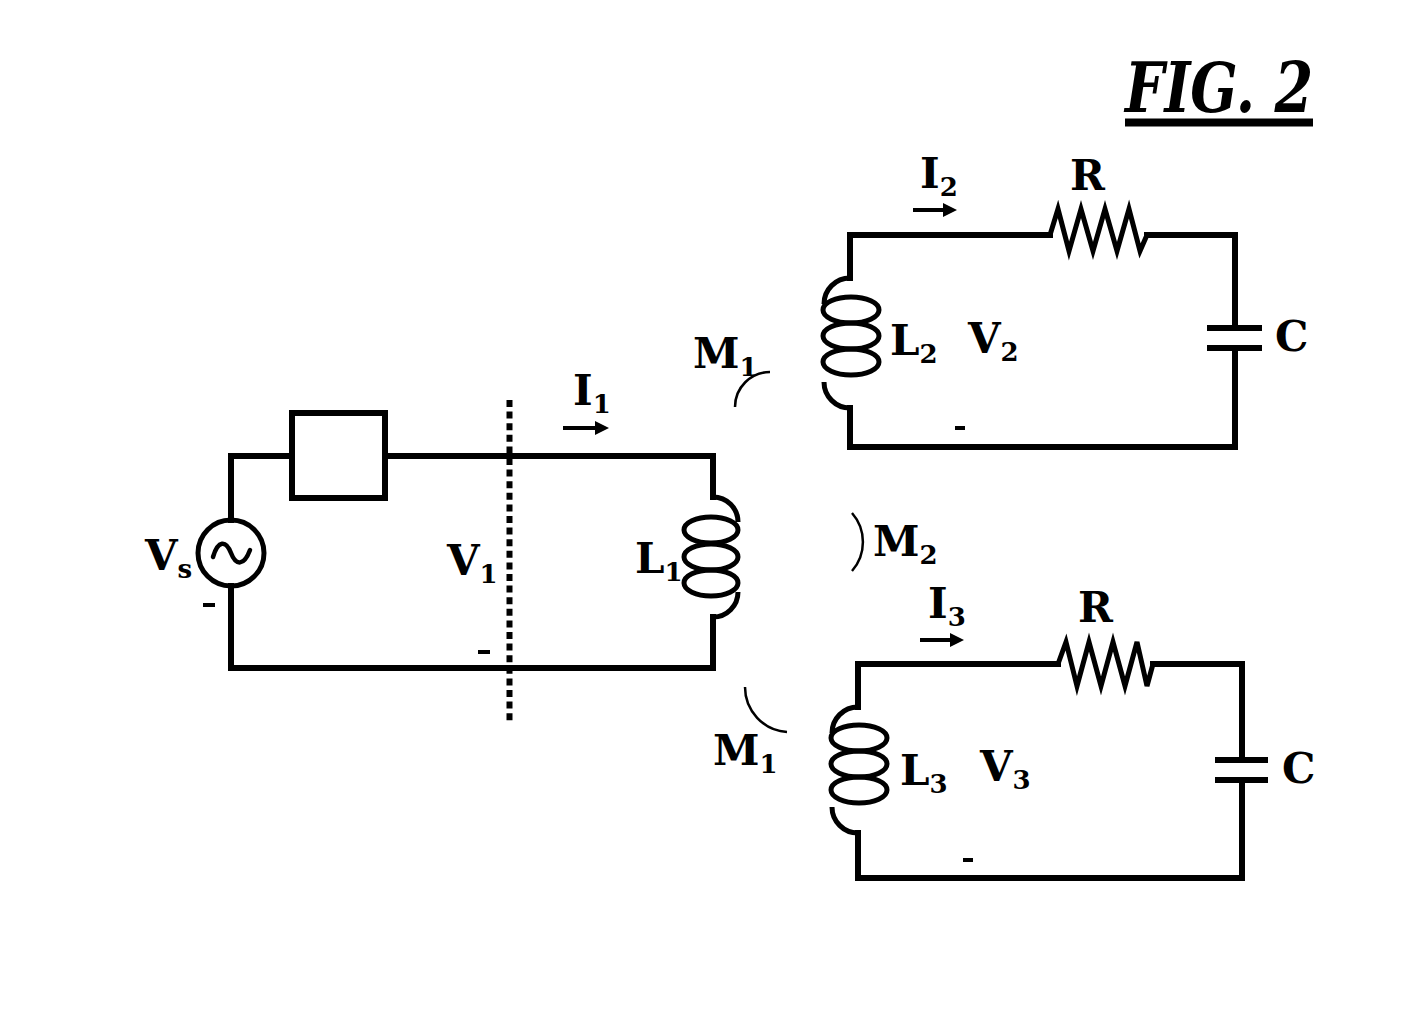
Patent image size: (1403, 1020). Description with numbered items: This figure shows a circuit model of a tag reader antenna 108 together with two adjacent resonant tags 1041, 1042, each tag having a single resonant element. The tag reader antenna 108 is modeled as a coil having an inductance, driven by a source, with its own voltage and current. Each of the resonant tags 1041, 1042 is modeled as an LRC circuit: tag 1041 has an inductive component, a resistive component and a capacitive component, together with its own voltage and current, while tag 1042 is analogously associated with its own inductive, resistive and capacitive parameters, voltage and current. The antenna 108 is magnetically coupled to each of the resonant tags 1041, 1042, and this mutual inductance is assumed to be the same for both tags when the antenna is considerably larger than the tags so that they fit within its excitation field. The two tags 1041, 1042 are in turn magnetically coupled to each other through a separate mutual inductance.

The tag reader antenna 108 is at (268, 432).
The resonant tag 1041 is at (1248, 290).
The resonant tag 1042 is at (1250, 715).